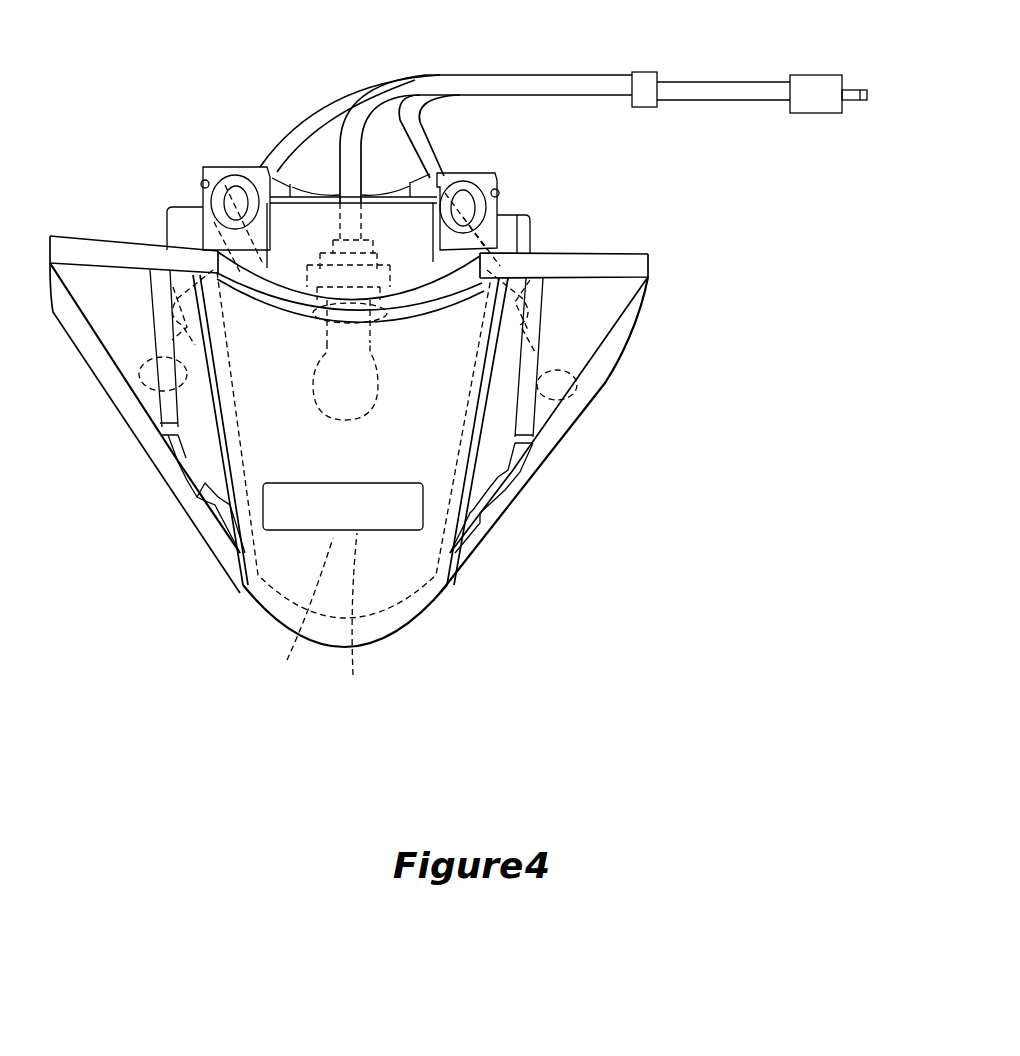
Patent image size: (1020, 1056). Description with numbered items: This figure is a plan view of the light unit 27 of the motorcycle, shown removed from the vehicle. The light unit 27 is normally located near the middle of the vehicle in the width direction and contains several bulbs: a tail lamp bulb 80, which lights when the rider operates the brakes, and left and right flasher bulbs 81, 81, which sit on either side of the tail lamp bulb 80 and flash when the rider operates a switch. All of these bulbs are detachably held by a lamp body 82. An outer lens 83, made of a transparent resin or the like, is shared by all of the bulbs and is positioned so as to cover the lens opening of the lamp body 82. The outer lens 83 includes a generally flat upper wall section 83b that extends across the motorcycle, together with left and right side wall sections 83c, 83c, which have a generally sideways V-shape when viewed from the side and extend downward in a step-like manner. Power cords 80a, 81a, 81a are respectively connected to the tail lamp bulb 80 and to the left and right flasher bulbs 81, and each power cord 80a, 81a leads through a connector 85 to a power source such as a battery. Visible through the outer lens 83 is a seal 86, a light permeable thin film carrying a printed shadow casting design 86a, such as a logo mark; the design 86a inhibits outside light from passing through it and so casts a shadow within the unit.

The light unit 27 is at (190, 600).
The tail lamp bulb 80 is at (373, 373).
The power cord 80a is at (341, 137).
The flasher bulb 81 is at (140, 367).
The power cord 81a is at (305, 123).
The lamp body 82 is at (179, 204).
The outer lens 83 is at (576, 428).
The upper wall section 83b is at (383, 555).
The side wall section 83c is at (98, 310).
The connector 85 is at (812, 73).
The seal 86 is at (298, 615).
The shadow casting design 86a is at (365, 617).